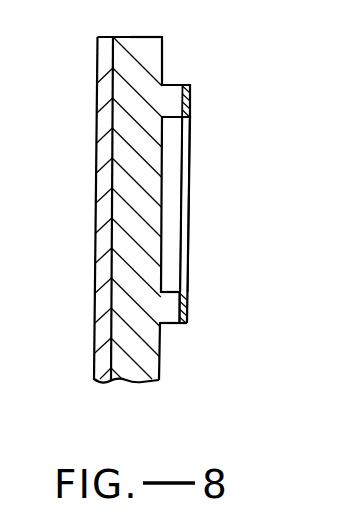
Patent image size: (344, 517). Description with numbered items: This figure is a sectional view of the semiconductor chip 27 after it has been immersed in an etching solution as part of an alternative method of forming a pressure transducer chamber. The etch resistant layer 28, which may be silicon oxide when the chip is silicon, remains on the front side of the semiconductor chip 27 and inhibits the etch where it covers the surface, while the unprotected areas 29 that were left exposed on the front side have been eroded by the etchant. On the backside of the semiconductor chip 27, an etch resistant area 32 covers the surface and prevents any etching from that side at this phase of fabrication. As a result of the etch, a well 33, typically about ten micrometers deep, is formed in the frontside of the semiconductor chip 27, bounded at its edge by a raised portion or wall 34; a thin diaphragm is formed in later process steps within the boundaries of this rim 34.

The semiconductor chip 27 is at (140, 41).
The etch resistant layer 28 is at (193, 112).
The unprotected areas 29 is at (162, 70).
The etch resistant area 32 is at (103, 148).
The well 33 is at (168, 291).
The raised portion or wall 34 is at (172, 326).